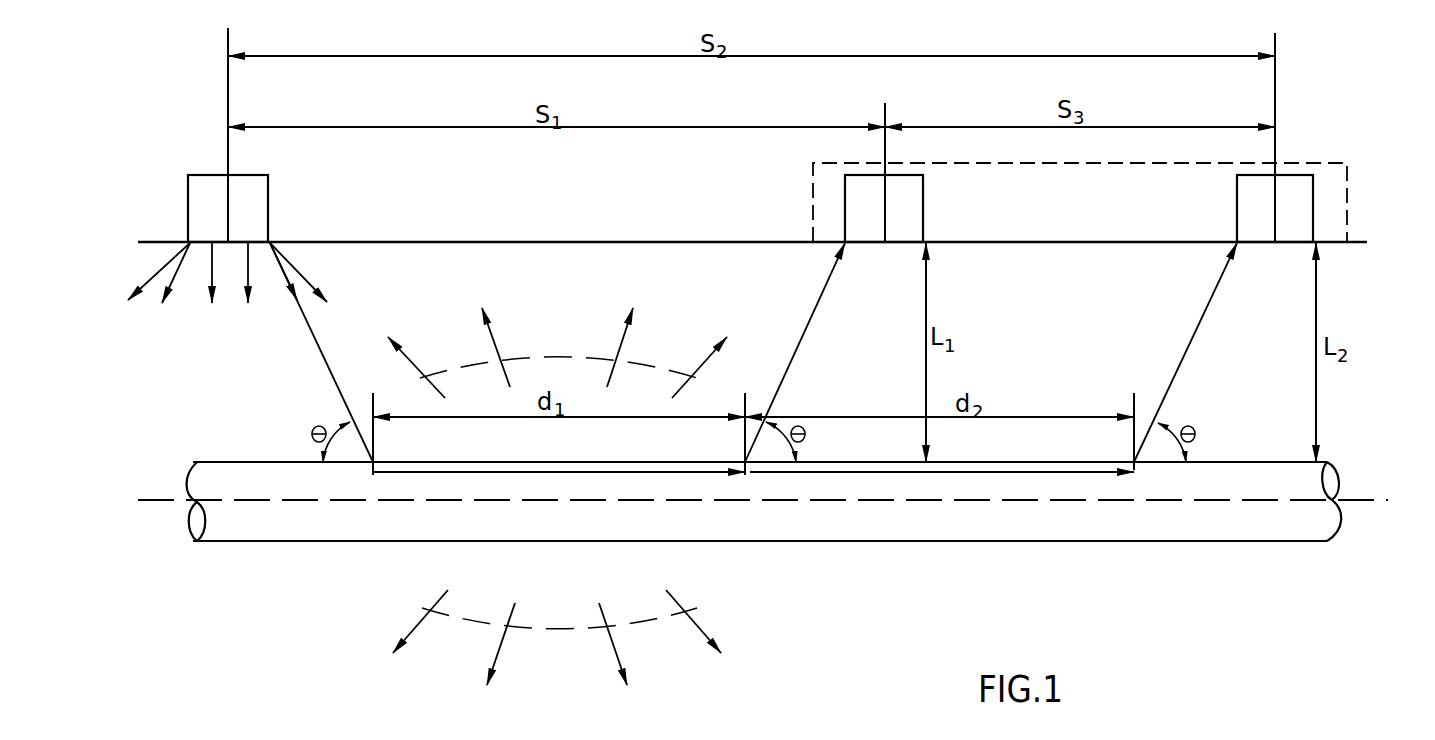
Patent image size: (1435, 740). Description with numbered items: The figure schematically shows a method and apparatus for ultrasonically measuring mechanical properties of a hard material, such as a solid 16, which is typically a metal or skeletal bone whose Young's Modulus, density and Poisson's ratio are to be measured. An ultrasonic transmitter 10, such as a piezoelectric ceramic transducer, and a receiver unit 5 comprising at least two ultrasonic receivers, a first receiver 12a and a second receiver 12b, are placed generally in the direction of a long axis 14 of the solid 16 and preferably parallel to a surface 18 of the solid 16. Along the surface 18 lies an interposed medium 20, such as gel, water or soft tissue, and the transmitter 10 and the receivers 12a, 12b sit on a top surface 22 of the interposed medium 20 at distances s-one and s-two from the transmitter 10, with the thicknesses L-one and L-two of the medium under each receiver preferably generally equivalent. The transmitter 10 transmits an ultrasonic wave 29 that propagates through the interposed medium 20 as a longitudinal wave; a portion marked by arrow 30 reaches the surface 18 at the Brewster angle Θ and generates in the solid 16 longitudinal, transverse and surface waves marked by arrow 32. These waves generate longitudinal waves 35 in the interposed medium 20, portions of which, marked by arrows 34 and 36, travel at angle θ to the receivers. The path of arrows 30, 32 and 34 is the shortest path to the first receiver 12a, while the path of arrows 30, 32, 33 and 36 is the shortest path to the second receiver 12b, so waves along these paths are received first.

The receiver unit 5 is at (1350, 163).
The ultrasonic transmitter 10 is at (212, 178).
The first ultrasonic receiver 12a is at (870, 217).
The second ultrasonic receiver 12b is at (1298, 183).
The long axis 14 is at (1360, 500).
The solid 16 is at (1332, 478).
The surface 18 is at (1212, 462).
The interposed medium 20 is at (1360, 372).
The top surface 22 is at (1358, 242).
The ultrasonic wave 29 is at (213, 288).
The arrow marking portion of wave 30 is at (322, 355).
The arrow marking generated waves 32 is at (533, 471).
The arrow marking path segment in solid 33 is at (982, 473).
The arrow marking first wave portion 34 is at (803, 335).
The longitudinal waves 35 is at (557, 496).
The arrow marking second wave portion 36 is at (1188, 350).